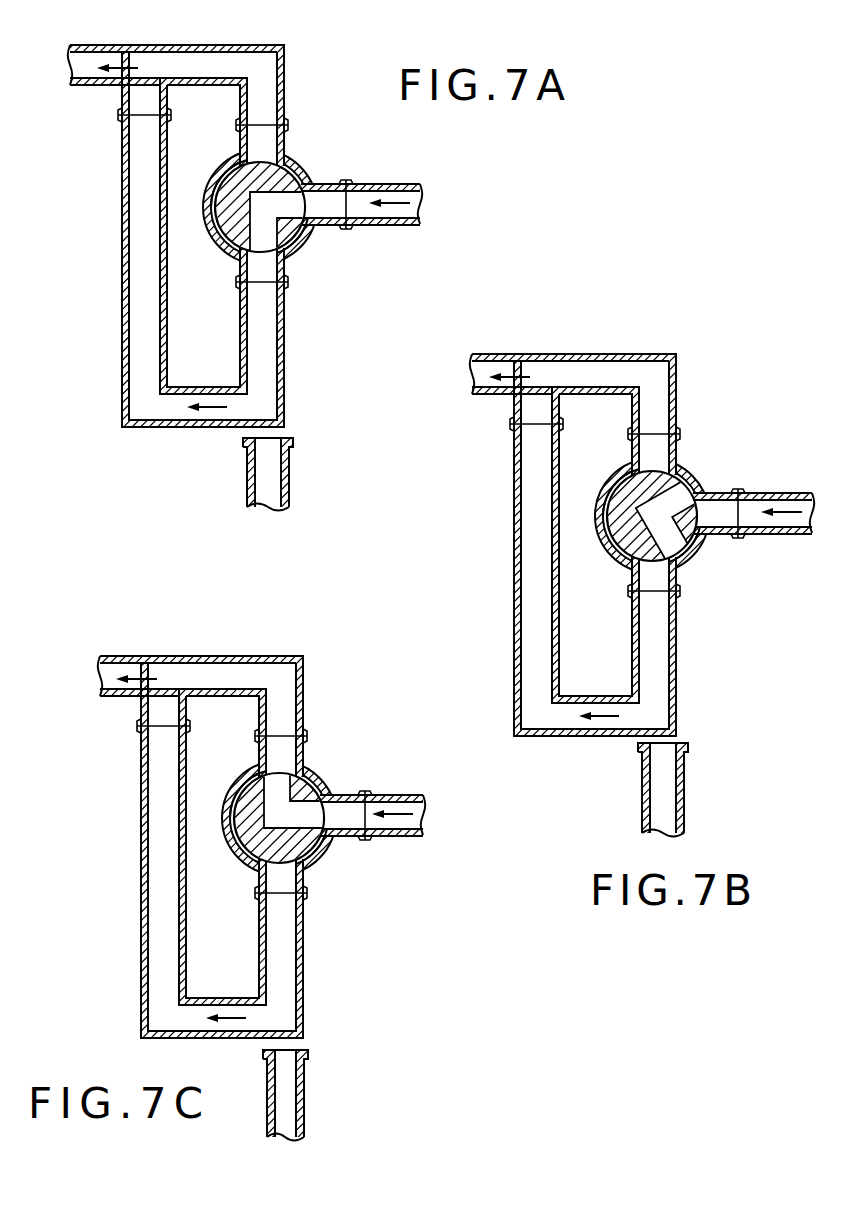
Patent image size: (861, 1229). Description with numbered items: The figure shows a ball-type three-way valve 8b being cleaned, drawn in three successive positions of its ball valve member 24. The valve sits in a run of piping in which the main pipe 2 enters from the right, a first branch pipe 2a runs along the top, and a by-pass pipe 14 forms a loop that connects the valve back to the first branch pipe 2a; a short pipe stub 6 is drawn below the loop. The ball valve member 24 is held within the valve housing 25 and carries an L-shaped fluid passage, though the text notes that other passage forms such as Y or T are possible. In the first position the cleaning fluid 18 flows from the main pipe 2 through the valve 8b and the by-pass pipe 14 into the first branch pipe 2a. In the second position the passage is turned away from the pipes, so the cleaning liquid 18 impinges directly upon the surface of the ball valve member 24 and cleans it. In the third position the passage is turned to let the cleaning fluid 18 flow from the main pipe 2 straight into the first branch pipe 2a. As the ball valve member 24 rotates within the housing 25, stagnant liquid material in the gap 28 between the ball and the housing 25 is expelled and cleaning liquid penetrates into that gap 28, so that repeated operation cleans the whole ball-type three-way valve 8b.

In FIG. 7A, the main pipe 2 is at (399, 226).
In FIG. 7B, the main pipe 2 is at (776, 535).
In FIG. 7C, the main pipe 2 is at (395, 839).
In FIG. 7A, the first branch pipe 2a is at (164, 45).
In FIG. 7B, the first branch pipe 2a is at (662, 544).
In FIG. 7C, the first branch pipe 2a is at (306, 841).
In FIG. 7A, the drain tube 6 is at (293, 480).
In FIG. 7B, the drain tube 6 is at (680, 790).
In FIG. 7C, the drain tube 6 is at (303, 1095).
In FIG. 7A, the ball-type three-way valve 8b is at (314, 157).
In FIG. 7B, the ball-type three-way valve 8b is at (662, 554).
In FIG. 7C, the ball-type three-way valve 8b is at (306, 856).
In FIG. 7A, the by-pass pipe 14 is at (122, 268).
In FIG. 7B, the by-pass pipe 14 is at (662, 554).
In FIG. 7C, the by-pass pipe 14 is at (306, 856).
In FIG. 7A, the cleaning fluid 18 is at (368, 184).
In FIG. 7B, the cleaning fluid 18 is at (742, 494).
In FIG. 7C, the cleaning fluid 18 is at (366, 796).
In FIG. 7A, the ball valve member 24 is at (231, 223).
In FIG. 7B, the ball valve member 24 is at (652, 516).
In FIG. 7C, the ball valve member 24 is at (278, 818).
In FIG. 7A, the valve housing 25 is at (222, 171).
In FIG. 7B, the valve housing 25 is at (608, 473).
In FIG. 7C, the valve housing 25 is at (234, 773).
In FIG. 7A, the gap 28 is at (301, 247).
In FIG. 7B, the gap 28 is at (711, 560).
In FIG. 7C, the gap 28 is at (332, 861).